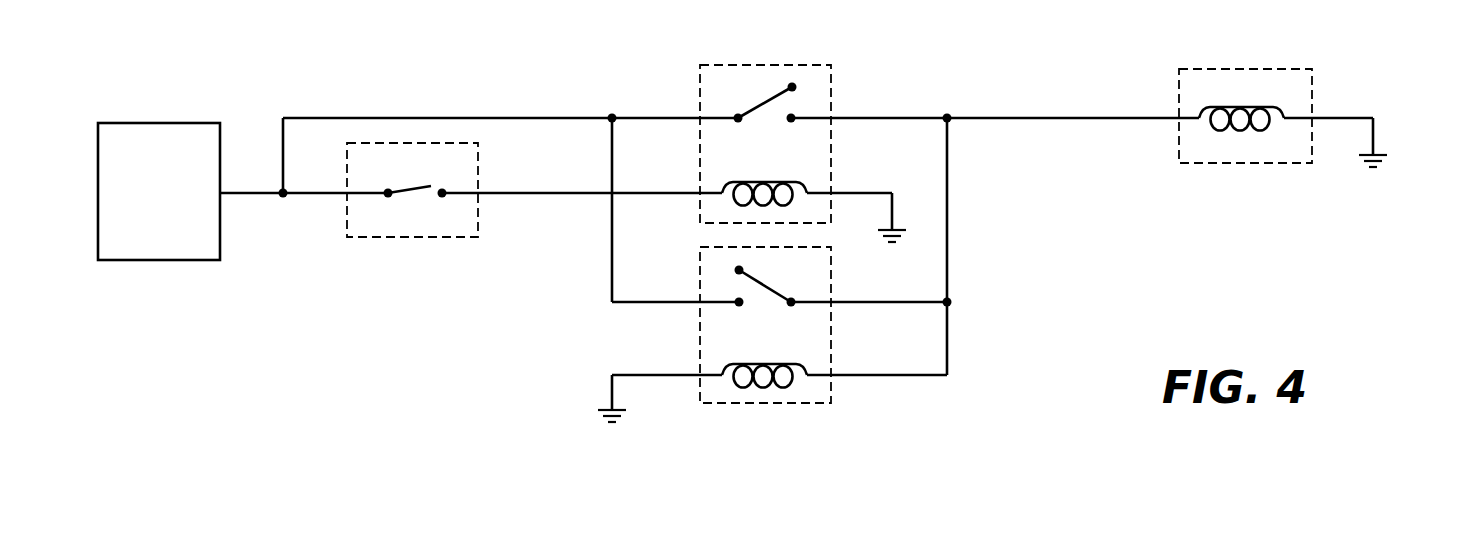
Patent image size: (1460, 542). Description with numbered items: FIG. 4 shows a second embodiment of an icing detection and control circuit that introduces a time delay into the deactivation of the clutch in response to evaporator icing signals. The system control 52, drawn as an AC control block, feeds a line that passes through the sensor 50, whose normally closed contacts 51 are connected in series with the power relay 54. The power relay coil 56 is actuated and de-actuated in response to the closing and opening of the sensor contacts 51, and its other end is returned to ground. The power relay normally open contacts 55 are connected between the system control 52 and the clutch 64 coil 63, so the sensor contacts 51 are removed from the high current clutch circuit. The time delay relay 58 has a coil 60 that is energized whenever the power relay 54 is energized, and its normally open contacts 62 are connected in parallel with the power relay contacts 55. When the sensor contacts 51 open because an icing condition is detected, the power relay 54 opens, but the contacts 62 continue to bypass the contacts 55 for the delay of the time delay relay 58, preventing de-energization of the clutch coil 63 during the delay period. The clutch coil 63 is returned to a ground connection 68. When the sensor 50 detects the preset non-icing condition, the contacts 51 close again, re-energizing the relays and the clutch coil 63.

The sensor 50 is at (436, 237).
The sensor normally closed contacts 51 is at (418, 187).
The system control 52 is at (172, 123).
The power relay 54 is at (808, 65).
The power relay normally open contacts 55 is at (765, 105).
The power relay coil 56 is at (767, 182).
The time delay relay 58 is at (808, 403).
The time delay relay coil 60 is at (768, 364).
The time delay relay normally open contacts 62 is at (766, 286).
The clutch coil 63 is at (1247, 107).
The clutch 64 is at (1289, 69).
The ground 68 is at (1381, 155).